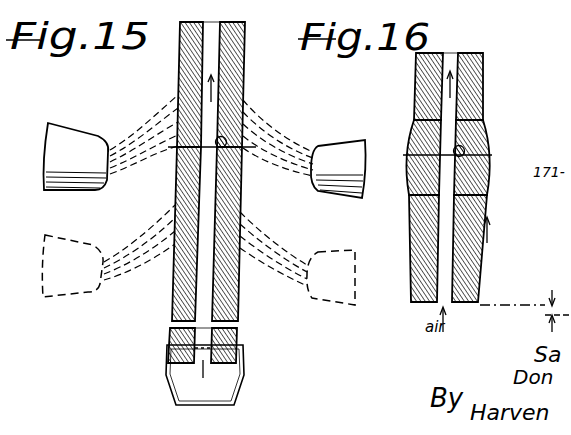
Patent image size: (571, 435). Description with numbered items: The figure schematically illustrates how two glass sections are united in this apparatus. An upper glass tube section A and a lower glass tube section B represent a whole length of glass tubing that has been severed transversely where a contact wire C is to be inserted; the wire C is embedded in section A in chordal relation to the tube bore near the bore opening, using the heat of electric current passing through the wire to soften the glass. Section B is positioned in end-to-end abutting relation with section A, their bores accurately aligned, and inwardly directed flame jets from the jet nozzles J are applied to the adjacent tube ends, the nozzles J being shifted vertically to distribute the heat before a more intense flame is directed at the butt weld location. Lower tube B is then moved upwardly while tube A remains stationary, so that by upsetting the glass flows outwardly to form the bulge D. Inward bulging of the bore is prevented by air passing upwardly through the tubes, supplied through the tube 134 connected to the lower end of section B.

In FIG. 15, the upper glass tube section A is at (246, 62).
In FIG. 16, the upper glass tube section A is at (570, 70).
In FIG. 15, the lower glass tube section B is at (240, 290).
In FIG. 16, the lower glass tube section B is at (570, 228).
In FIG. 15, the contact wire C is at (226, 138).
In FIG. 16, the contact wire C is at (463, 147).
In FIG. 16, the bulge D is at (490, 140).
In FIG. 15, the jet nozzles J is at (74, 128).
In FIG. 15, the tube 134 is at (245, 379).